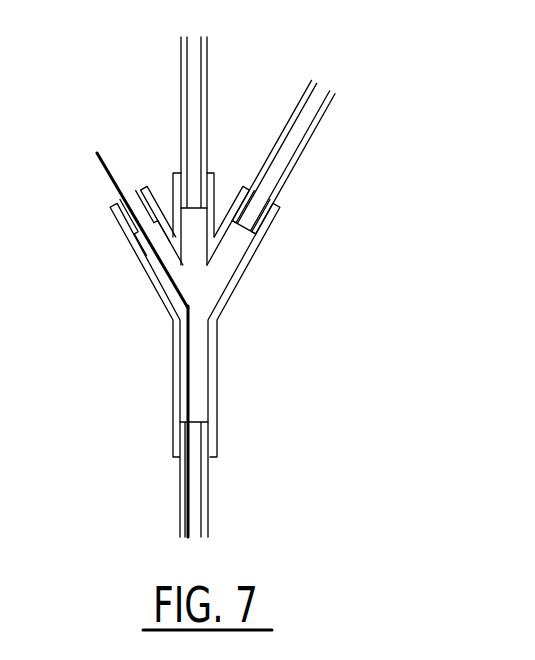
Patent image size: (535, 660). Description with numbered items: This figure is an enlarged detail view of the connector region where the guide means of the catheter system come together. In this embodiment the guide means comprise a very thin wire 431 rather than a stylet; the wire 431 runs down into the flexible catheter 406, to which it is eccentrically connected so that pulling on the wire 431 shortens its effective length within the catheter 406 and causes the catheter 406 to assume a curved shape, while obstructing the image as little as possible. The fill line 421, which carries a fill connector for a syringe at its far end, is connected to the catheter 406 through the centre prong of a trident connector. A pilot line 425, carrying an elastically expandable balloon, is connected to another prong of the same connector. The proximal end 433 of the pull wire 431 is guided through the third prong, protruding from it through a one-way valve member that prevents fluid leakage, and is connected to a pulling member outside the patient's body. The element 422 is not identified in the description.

The flexible catheter 406 is at (202, 518).
The fill line 421 is at (207, 53).
The Y-connector body 422 is at (203, 428).
The pilot line 425 is at (305, 153).
The wire 431 is at (185, 472).
The proximal end of the wire 433 is at (97, 153).